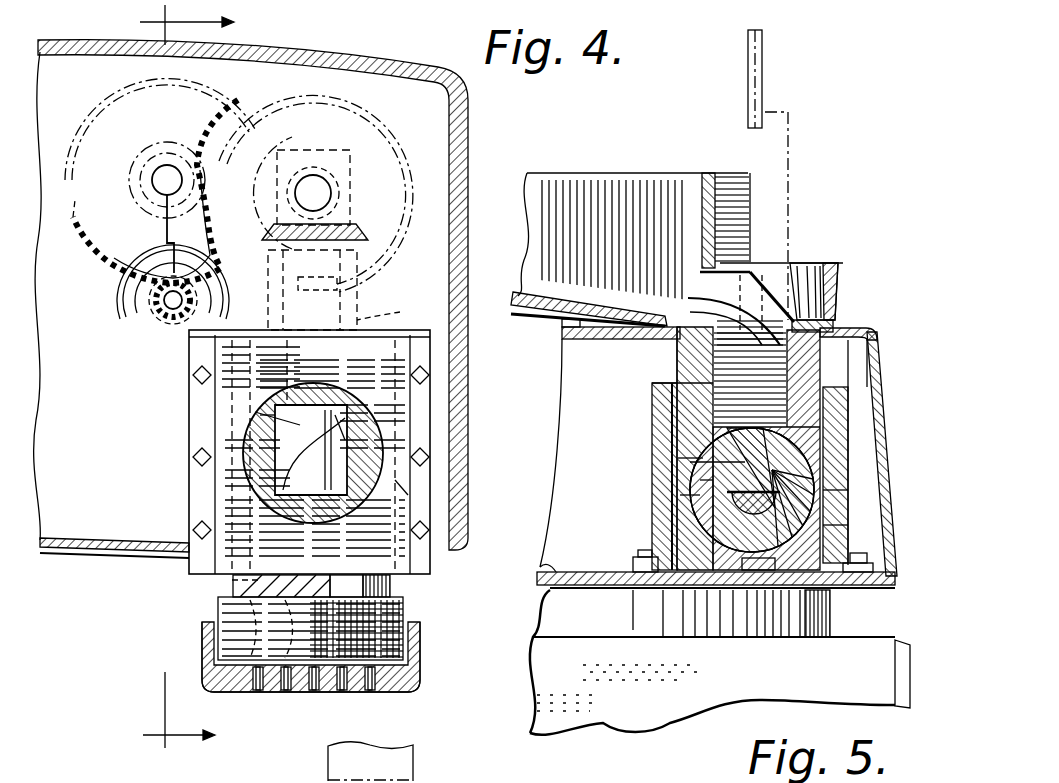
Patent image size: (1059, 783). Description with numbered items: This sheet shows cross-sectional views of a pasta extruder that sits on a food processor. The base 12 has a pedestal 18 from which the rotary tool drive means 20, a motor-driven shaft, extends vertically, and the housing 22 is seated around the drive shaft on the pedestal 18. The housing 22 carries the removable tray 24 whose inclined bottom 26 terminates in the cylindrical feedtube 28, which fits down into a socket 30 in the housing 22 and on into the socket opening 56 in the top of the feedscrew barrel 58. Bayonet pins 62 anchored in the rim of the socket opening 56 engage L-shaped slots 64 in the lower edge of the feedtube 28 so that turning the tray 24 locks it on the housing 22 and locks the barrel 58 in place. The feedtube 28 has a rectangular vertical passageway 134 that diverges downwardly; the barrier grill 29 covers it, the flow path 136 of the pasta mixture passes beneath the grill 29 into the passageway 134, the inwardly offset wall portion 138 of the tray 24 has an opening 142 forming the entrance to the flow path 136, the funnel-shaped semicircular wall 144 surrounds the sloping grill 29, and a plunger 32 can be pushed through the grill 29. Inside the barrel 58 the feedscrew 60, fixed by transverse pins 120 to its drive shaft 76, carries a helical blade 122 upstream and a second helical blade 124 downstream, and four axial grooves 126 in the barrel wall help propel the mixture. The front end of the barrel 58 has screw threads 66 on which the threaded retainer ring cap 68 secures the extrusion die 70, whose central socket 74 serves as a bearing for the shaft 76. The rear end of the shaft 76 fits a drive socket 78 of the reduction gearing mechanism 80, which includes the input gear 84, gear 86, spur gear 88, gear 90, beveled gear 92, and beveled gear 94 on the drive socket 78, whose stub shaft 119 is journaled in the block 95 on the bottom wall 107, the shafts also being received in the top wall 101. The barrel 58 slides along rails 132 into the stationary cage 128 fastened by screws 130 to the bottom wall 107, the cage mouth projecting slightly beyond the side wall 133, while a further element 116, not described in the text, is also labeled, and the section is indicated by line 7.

In FIG. 4, the section line 7- 7 is at (196, 379).
In FIG. 5, the base 12 is at (665, 716).
In FIG. 5, the pedestal 18 is at (830, 615).
In FIG. 4, the rotary tool drive means 20 is at (172, 308).
In FIG. 4, the housing 22 is at (127, 552).
In FIG. 5, the housing 22 is at (890, 425).
In FIG. 5, the removable tray 24 is at (596, 168).
In FIG. 5, the inclined bottom 26 is at (525, 277).
In FIG. 4, the feedtube 28 is at (260, 415).
In FIG. 5, the feedtube 28 is at (830, 345).
In FIG. 5, the barrier grill 29 is at (772, 270).
In FIG. 4, the socket 30 is at (255, 412).
In FIG. 5, the socket 30 is at (868, 367).
In FIG. 5, the plunger 32 is at (790, 130).
In FIG. 5, the socket opening 56 is at (670, 405).
In FIG. 4, the feedscrew barrel 58 is at (395, 587).
In FIG. 5, the feedscrew barrel 58 is at (835, 455).
In FIG. 4, the feedscrew 60 is at (313, 453).
In FIG. 5, the feedscrew 60 is at (775, 525).
In FIG. 5, the bayonet pins 62 is at (680, 360).
In FIG. 5, the L-shaped slots 64 is at (665, 398).
In FIG. 4, the screw threads 66 is at (408, 630).
In FIG. 4, the threaded retainer ring cap 68 is at (415, 686).
In FIG. 4, the extrusion die 70 is at (353, 693).
In FIG. 4, the socket 74 is at (304, 688).
In FIG. 4, the drive shaft 76 is at (322, 713).
In FIG. 5, the drive shaft 76 is at (713, 480).
In FIG. 4, the drive socket 78 is at (343, 262).
In FIG. 4, the reduction gearing mechanism 80 is at (267, 84).
In FIG. 4, the input gear 84 is at (155, 291).
In FIG. 4, the gear 86 is at (84, 238).
In FIG. 4, the spur gear 88 is at (178, 127).
In FIG. 4, the gear 90 is at (208, 102).
In FIG. 4, the beveled gear 92 is at (345, 200).
In FIG. 4, the beveled gear 94 is at (357, 228).
In FIG. 4, the block 95 is at (378, 145).
In FIG. 5, the top wall 101 is at (562, 350).
In FIG. 5, the bottom wall 107 is at (540, 560).
In FIG. 4, the rod 116 is at (413, 757).
In FIG. 5, the rod 116 is at (765, 50).
In FIG. 4, the stub shaft 119 is at (302, 175).
In FIG. 5, the transverse pins 120 is at (735, 520).
In FIG. 4, the helical blade 122 is at (345, 430).
In FIG. 5, the helical blade 122 is at (678, 465).
In FIG. 4, the second helical blade 124 is at (232, 580).
In FIG. 5, the grooves 126 is at (832, 528).
In FIG. 4, the stationary cage 128 is at (400, 488).
In FIG. 5, the stationary cage 128 is at (832, 493).
In FIG. 4, the screws 130 is at (200, 522).
In FIG. 5, the screws 130 is at (640, 556).
In FIG. 5, the rails 132 is at (695, 575).
In FIG. 4, the side wall 133 is at (74, 555).
In FIG. 4, the vertical passageway 134 is at (213, 434).
In FIG. 5, the vertical passageway 134 is at (830, 325).
In FIG. 5, the flow path 136 is at (695, 292).
In FIG. 5, the offset wall portion 138 is at (705, 195).
In FIG. 5, the opening 142 is at (705, 272).
In FIG. 5, the funnel-shaped semicircular wall 144 is at (841, 268).